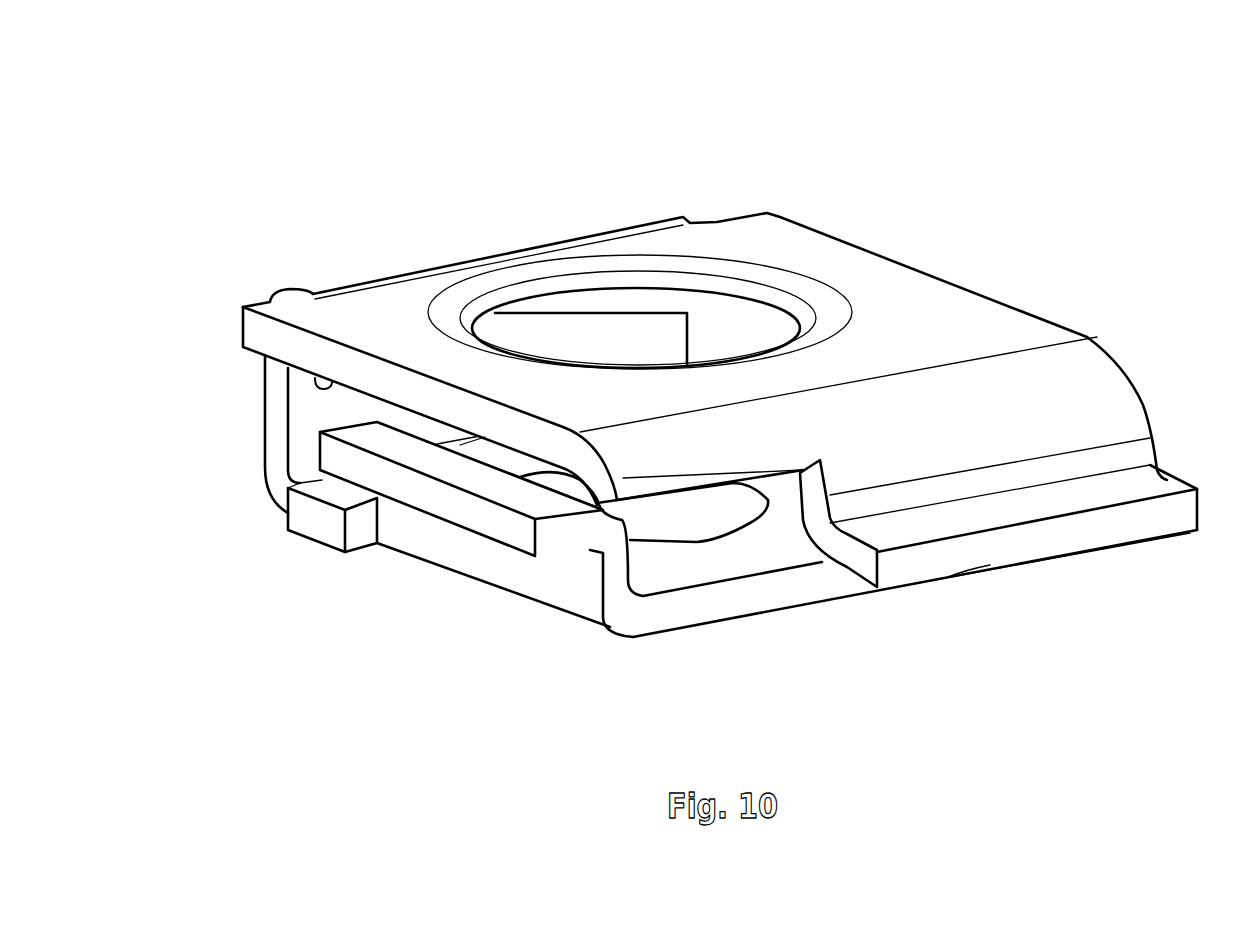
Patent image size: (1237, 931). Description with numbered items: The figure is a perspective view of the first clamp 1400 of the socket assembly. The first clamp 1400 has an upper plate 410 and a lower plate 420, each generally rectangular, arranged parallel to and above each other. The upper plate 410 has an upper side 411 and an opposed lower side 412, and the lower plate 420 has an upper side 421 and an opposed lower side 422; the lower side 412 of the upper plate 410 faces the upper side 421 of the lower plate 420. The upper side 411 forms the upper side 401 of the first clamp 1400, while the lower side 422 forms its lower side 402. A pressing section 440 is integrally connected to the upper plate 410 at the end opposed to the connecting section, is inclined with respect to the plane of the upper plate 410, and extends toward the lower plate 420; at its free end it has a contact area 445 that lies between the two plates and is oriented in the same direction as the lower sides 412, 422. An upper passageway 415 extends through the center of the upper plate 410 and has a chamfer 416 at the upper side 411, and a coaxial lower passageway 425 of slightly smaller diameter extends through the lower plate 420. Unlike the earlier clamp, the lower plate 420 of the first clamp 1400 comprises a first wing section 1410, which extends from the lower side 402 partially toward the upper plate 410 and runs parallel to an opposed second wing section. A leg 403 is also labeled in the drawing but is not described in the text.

The first clamp 1400 is at (347, 86).
The upper side of the first clamp 401 is at (716, 158).
The lower side of the first clamp 402 is at (821, 686).
The leg 403 is at (278, 393).
The upper plate 410 is at (963, 300).
The upper side of the upper plate 411 is at (880, 272).
The lower side of the upper plate 412 is at (315, 378).
The upper passageway 415 is at (785, 305).
The chamfer 416 is at (757, 278).
The lower plate 420 is at (763, 593).
The upper side of the lower plate 421 is at (733, 567).
The lower side of the lower plate 422 is at (842, 603).
The lower passageway 425 is at (668, 522).
The pressing section 440 is at (1165, 483).
The contact area 445 is at (1120, 550).
The first wing section 1410 is at (452, 503).